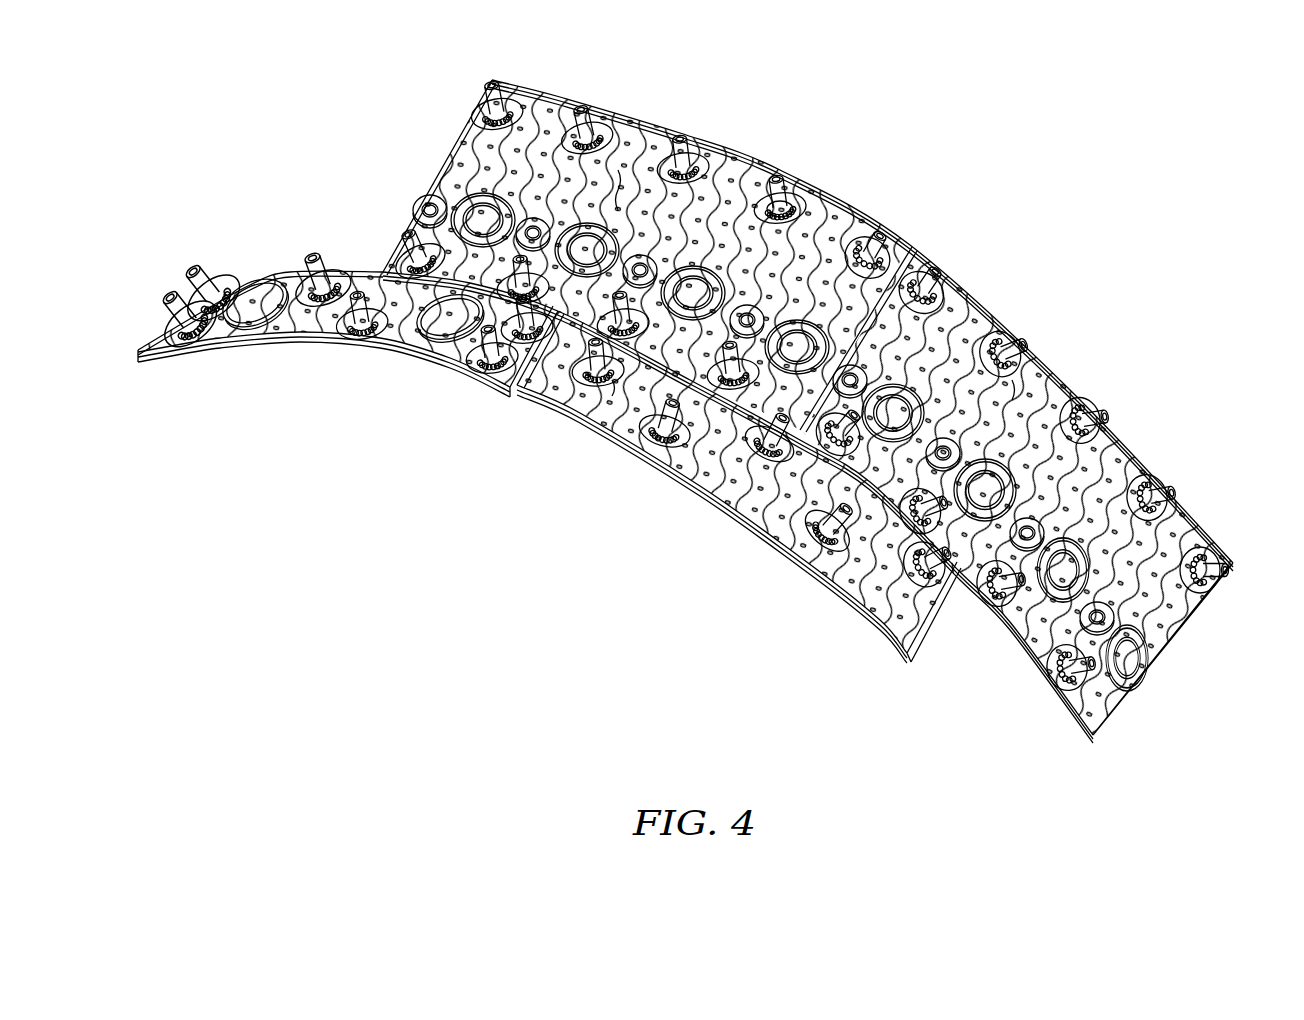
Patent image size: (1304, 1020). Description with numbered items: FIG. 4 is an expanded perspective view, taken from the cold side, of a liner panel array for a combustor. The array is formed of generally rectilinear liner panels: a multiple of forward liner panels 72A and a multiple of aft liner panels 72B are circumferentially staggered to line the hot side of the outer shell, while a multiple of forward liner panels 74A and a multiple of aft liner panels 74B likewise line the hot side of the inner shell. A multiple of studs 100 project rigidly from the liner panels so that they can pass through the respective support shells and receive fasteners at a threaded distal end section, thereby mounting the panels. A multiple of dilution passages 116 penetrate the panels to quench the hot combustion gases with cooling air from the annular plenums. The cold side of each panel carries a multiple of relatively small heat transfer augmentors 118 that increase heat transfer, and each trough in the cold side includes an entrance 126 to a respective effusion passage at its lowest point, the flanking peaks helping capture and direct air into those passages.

The forward liner panels 72A is at (652, 510).
The forward liner panels 74A is at (949, 650).
The aft liner panels 72B is at (652, 510).
The aft liner panels 74B is at (1181, 663).
The studs 100 is at (778, 184).
The dilution passages 116 is at (993, 493).
The heat transfer augmentors 118 is at (793, 207).
The entrance 126 is at (626, 188).